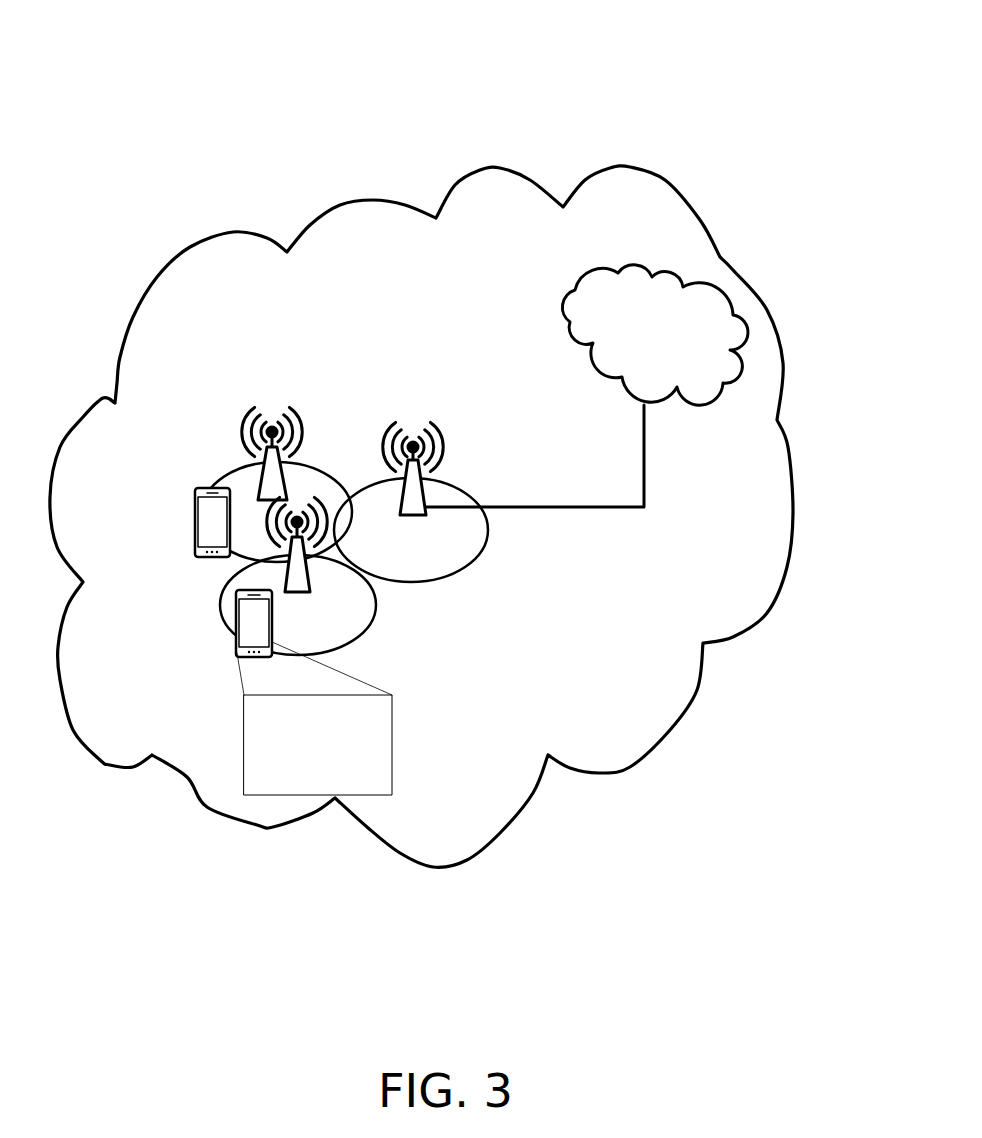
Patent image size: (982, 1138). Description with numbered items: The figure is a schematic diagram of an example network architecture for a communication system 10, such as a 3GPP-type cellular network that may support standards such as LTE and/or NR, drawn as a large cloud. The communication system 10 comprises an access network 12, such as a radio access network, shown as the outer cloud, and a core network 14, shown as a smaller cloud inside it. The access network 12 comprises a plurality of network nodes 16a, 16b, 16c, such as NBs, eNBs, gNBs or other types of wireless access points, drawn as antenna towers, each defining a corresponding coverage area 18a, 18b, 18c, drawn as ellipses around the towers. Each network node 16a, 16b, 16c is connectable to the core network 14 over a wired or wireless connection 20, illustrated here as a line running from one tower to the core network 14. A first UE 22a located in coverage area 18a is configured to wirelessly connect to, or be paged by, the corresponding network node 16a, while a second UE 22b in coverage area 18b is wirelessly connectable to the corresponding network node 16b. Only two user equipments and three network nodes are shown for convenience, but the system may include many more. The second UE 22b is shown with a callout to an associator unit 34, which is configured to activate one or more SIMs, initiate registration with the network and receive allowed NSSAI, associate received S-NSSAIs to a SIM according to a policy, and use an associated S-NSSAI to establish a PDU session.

The communication system 10 is at (219, 63).
The access network 12 is at (503, 207).
The core network 14 is at (712, 341).
The network node 16a is at (243, 437).
The network node 16b is at (310, 590).
The network node 16c is at (433, 450).
The coverage area 18a is at (218, 485).
The coverage area 18b is at (377, 603).
The coverage area 18c is at (488, 530).
The wired or wireless connection 20 is at (645, 460).
The first UE 22a is at (197, 540).
The second UE 22b is at (237, 655).
The associator unit 34 is at (356, 775).